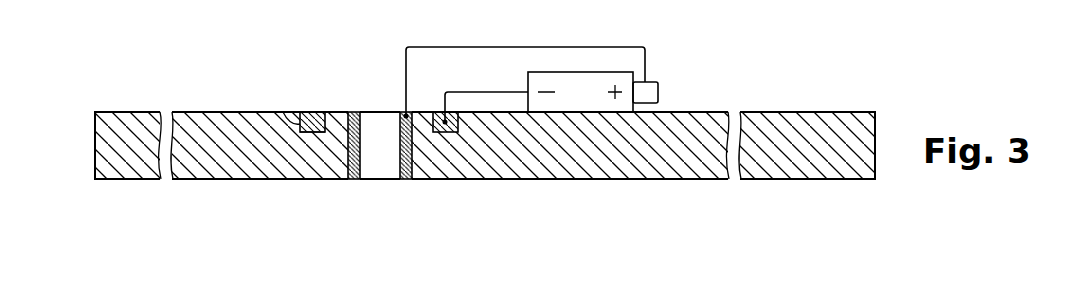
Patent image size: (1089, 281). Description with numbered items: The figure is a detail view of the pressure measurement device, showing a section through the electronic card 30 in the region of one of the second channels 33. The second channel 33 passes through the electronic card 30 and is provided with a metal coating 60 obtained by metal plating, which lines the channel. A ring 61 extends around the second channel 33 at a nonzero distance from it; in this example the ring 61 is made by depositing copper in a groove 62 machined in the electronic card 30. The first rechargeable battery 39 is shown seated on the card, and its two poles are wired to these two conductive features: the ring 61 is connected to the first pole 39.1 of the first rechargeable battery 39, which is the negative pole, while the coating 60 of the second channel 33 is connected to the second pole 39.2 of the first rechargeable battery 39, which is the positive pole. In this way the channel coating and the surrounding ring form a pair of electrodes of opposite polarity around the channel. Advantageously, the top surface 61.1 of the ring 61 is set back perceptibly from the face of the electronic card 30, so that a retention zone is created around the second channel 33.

The electronic card 30 is at (693, 157).
The second channel 33 is at (382, 123).
The first rechargeable battery 39 is at (588, 98).
The first pole 39.1 is at (540, 102).
The second pole 39.2 is at (623, 82).
The coating 60 is at (350, 179).
The ring 61 is at (283, 112).
The top surface 61.1 is at (313, 112).
The groove 62 is at (304, 133).